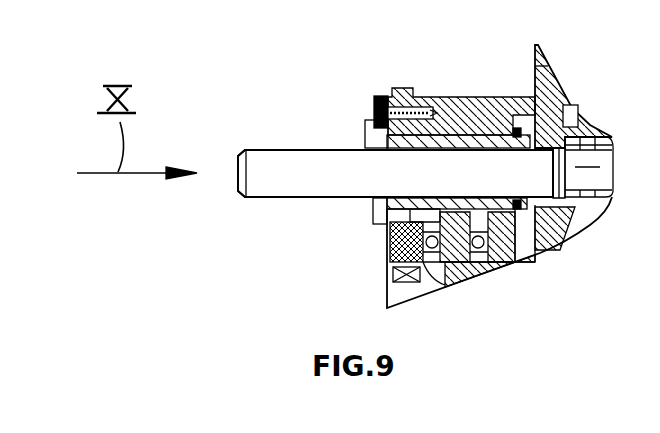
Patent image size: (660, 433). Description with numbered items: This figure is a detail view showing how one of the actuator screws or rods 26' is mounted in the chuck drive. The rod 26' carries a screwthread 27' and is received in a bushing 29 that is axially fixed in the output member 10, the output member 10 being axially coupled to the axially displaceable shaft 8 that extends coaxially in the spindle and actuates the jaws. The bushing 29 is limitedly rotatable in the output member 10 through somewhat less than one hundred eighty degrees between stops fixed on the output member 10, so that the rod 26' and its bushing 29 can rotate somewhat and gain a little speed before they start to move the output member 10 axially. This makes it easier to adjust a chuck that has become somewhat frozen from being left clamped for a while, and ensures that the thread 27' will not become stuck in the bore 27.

The actuator screw or rod 26' is at (380, 136).
The screwthread 27' is at (432, 113).
The bore 27 is at (291, 226).
The output member 10 is at (450, 108).
The bushing 29 is at (482, 143).
The shaft 8 is at (458, 265).